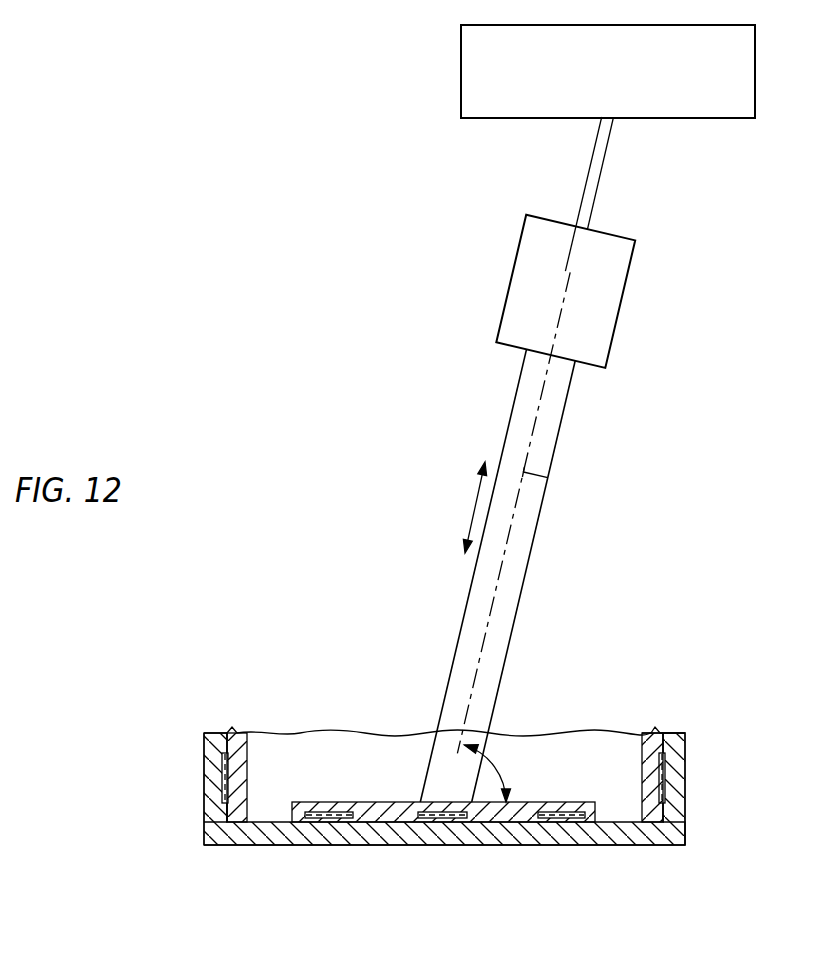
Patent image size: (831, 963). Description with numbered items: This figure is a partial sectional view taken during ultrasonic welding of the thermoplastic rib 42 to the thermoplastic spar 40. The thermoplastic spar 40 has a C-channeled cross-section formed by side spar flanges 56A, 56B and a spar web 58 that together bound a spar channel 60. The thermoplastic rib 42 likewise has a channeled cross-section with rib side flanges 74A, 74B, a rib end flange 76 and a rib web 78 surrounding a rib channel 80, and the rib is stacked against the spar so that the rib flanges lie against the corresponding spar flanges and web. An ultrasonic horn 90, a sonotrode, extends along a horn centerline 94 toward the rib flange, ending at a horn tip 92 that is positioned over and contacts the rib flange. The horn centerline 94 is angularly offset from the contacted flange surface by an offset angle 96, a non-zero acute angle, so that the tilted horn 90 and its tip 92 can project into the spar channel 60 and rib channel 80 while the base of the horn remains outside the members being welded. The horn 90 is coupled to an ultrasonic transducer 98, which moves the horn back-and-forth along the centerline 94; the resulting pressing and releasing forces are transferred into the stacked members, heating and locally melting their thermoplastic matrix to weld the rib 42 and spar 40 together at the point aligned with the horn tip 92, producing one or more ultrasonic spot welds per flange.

The ultrasonic transducer 98 is at (622, 102).
The ultrasonic horn 90 is at (590, 412).
The horn centerline 94 is at (552, 479).
The offset angle 96 is at (495, 757).
The thermoplastic spar 40 is at (620, 852).
The spar web 58 is at (286, 852).
The side spar flange 56A is at (200, 747).
The side spar flange 56B is at (690, 758).
The rib side flange 74A is at (259, 761).
The rib side flange 74B is at (628, 761).
The thermoplastic rib 42 is at (654, 720).
The spar channel 60 is at (216, 814).
The rib web 78 is at (551, 719).
The rib channel 80 is at (330, 749).
The rib end flange 76 is at (388, 786).
The horn tip 92 is at (432, 814).